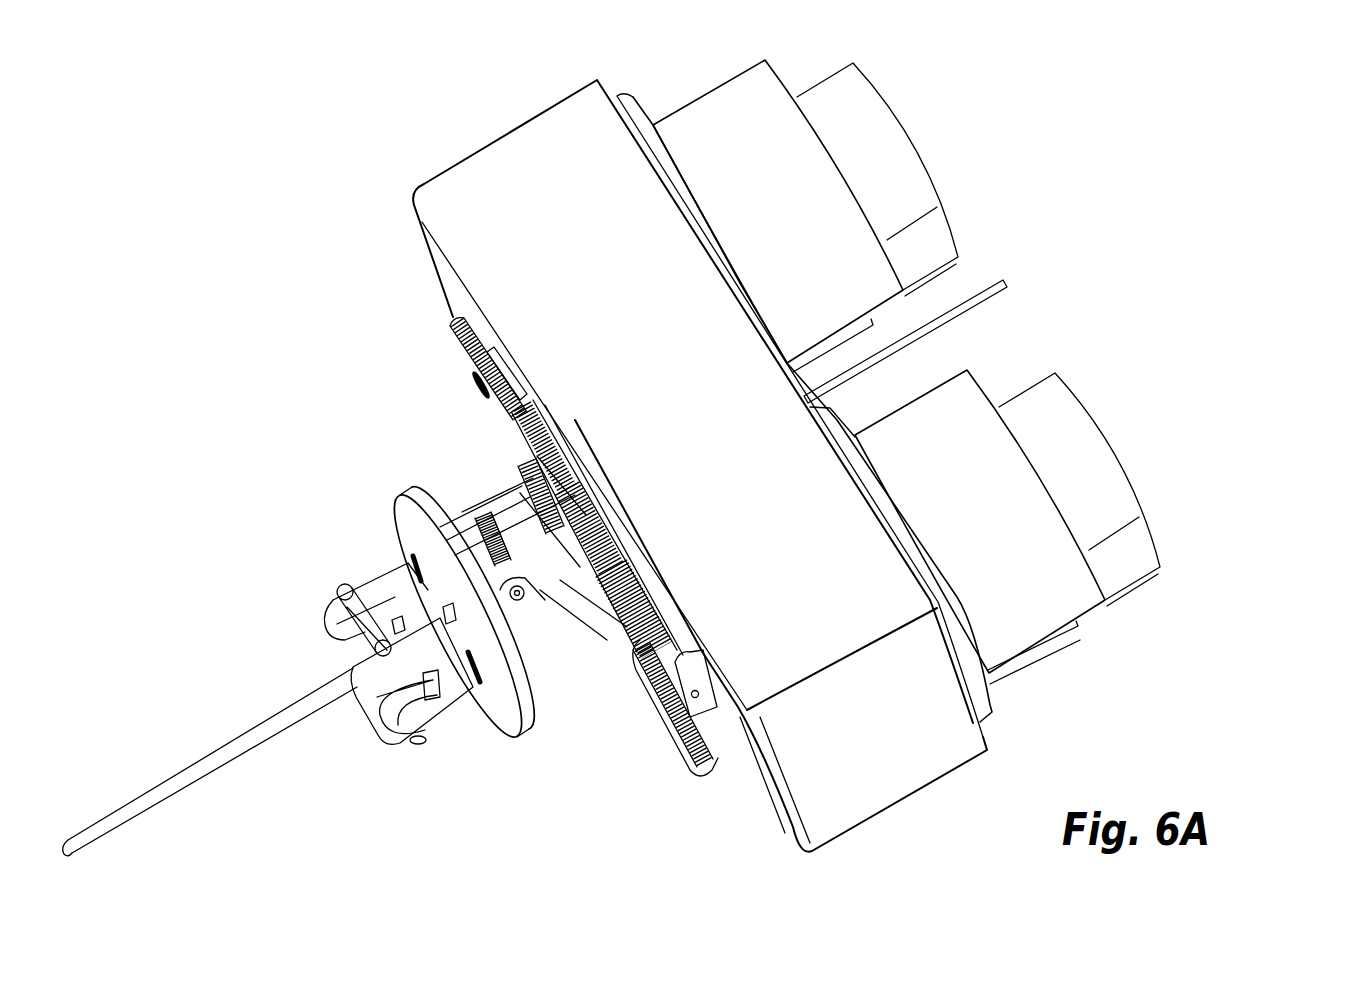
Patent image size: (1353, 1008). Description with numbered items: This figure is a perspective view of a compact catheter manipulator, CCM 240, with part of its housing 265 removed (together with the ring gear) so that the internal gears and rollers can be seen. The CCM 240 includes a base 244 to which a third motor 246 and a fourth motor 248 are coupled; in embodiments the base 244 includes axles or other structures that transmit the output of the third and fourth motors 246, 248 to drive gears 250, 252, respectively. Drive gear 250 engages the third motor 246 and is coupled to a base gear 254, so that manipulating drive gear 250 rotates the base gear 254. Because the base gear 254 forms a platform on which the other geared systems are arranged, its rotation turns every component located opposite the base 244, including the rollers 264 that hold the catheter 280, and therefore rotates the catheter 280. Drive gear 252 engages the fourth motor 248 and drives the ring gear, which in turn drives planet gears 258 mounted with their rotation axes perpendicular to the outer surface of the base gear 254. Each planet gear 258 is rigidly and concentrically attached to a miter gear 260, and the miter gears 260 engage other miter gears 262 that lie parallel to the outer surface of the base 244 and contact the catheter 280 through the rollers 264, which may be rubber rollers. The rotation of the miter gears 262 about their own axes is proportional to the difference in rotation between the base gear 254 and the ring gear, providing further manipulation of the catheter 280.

The compact catheter manipulator 240 is at (1224, 150).
The base 244 is at (526, 146).
The third motor 246 is at (802, 162).
The fourth motor 248 is at (1090, 465).
The drive gear 250 is at (450, 328).
The drive gear 252 is at (670, 750).
The base gear 254 is at (514, 440).
The planet gears 258 is at (514, 482).
The miter gears 260 is at (484, 508).
The miter gears 262 is at (514, 564).
The rollers 264 is at (520, 600).
The housing 265 is at (509, 745).
The catheter 280 is at (254, 759).